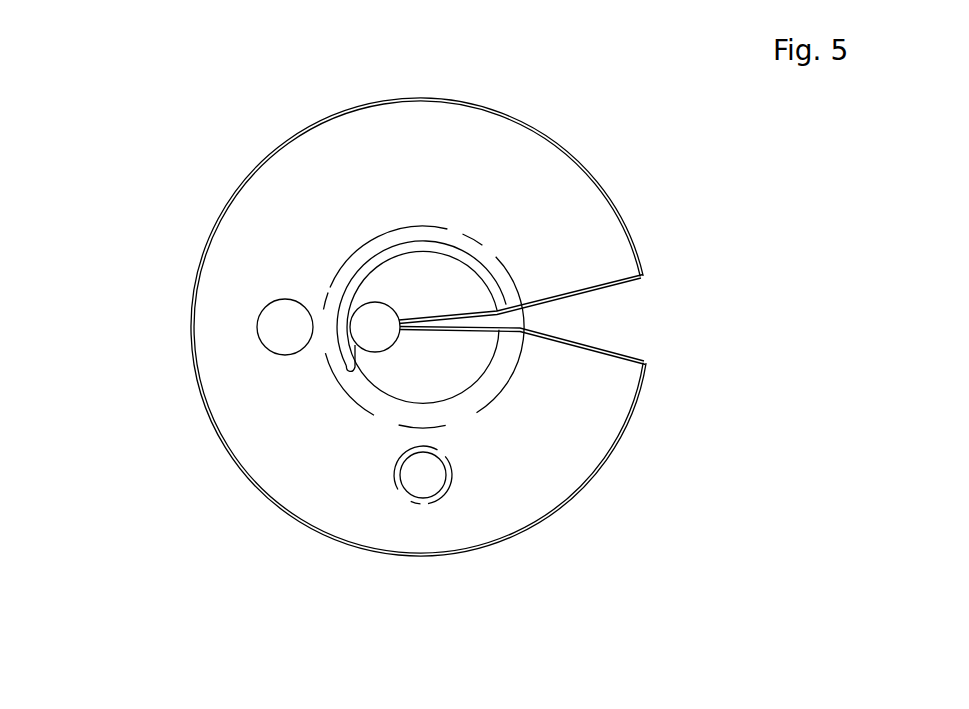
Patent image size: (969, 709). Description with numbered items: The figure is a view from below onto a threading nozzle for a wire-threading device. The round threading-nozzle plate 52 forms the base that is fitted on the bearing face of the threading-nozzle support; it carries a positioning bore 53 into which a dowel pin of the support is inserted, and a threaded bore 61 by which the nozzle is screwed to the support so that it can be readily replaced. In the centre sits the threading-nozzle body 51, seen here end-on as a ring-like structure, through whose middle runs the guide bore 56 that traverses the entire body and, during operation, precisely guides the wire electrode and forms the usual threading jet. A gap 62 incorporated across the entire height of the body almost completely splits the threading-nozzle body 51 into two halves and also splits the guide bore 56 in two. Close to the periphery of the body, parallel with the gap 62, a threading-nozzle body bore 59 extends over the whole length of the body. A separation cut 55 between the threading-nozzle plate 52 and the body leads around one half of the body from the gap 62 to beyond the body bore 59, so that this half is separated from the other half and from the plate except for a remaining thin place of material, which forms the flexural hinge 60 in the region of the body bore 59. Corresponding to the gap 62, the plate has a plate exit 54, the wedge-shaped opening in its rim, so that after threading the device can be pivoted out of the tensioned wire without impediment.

The threading-nozzle body 51 is at (423, 275).
The threading-nozzle plate 52 is at (300, 193).
The positioning bore 53 is at (263, 340).
The plate exit 54 is at (617, 318).
The separation cut 55 is at (360, 273).
The guide bore 56 is at (422, 320).
The threading-nozzle body bore 59 is at (377, 340).
The flexural hinge 60 is at (348, 332).
The threaded bore 61 is at (410, 498).
The gap 62 is at (447, 327).